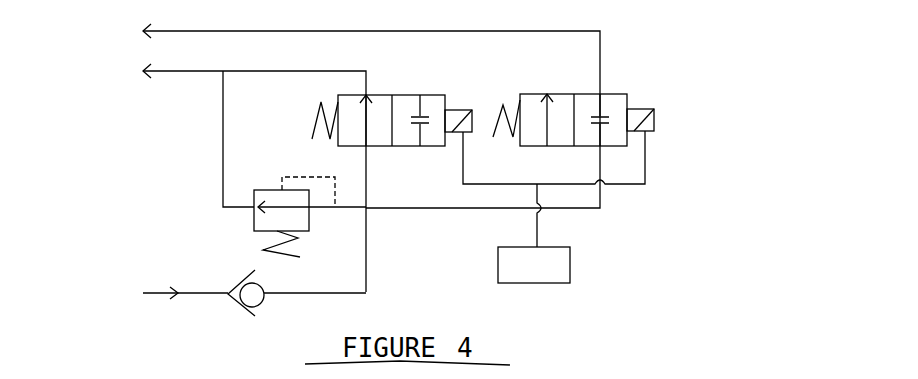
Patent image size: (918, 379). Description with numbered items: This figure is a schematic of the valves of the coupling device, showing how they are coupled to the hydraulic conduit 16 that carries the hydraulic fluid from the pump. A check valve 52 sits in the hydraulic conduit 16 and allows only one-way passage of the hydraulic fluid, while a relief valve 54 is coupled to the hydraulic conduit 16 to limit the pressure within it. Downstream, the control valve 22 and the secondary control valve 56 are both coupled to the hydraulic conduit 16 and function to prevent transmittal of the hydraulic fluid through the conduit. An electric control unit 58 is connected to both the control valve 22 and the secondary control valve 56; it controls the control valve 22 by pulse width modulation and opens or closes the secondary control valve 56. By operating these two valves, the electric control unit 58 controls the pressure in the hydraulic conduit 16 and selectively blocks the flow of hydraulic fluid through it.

The hydraulic conduit 16 is at (214, 71).
The control valve 22 is at (627, 110).
The check valve 52 is at (250, 283).
The relief valve 54 is at (296, 221).
The secondary control valve 56 is at (384, 107).
The electric control unit 58 is at (561, 277).